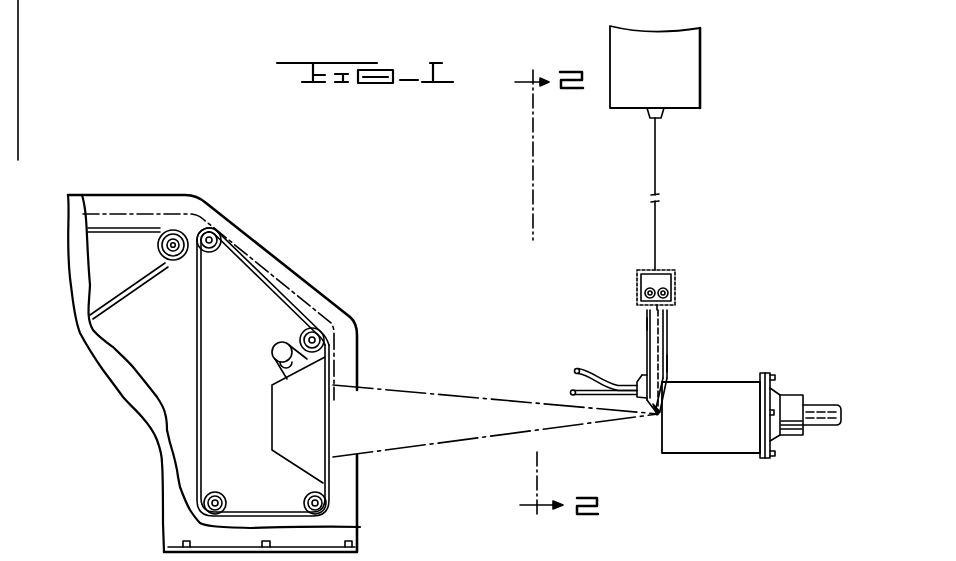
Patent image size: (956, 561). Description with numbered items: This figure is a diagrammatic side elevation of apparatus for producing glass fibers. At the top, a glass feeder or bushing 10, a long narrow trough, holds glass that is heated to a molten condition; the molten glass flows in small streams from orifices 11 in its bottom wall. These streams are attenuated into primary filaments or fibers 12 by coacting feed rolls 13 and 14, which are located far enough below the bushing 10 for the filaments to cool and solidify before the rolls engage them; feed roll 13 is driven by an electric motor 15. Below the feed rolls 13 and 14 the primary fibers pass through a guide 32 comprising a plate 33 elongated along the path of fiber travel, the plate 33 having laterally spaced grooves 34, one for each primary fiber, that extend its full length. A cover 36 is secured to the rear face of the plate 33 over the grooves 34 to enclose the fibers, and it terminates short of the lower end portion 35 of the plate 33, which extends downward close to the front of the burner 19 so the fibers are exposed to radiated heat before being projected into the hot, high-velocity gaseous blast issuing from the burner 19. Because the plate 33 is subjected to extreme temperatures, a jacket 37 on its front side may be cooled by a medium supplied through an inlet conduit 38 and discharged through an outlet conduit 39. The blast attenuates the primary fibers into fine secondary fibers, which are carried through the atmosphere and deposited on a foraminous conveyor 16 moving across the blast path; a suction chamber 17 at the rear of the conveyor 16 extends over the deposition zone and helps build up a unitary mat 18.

The glass feeder or bushing 10 is at (690, 63).
The orifices 11 is at (657, 115).
The primary filaments or fibers 12 is at (657, 179).
The feed roll 13 is at (645, 291).
The feed roll 14 is at (668, 293).
The electric motor 15 is at (676, 276).
The foraminous conveyor 16 is at (303, 307).
The suction chamber 17 is at (287, 408).
The unitary mat 18 is at (335, 374).
The burner 19 is at (721, 381).
The guide 32 is at (667, 331).
The plate 33 is at (648, 322).
The grooves 34 is at (656, 352).
The lower end portion 35 is at (657, 413).
The cover 36 is at (668, 366).
The jacket 37 is at (645, 391).
The inlet conduit 38 is at (588, 373).
The outlet conduit 39 is at (588, 390).